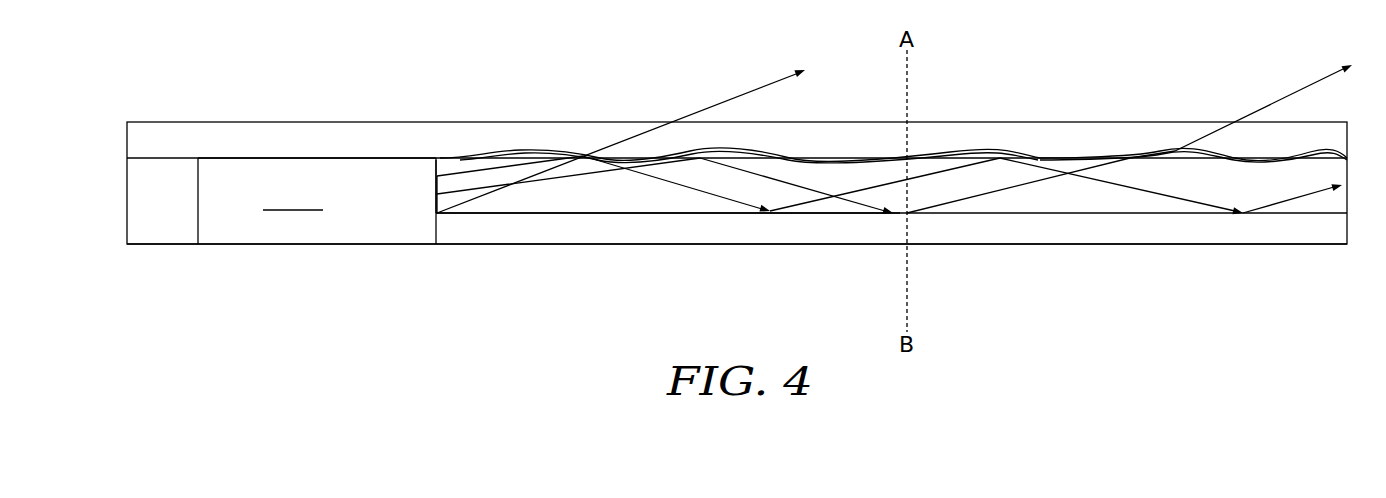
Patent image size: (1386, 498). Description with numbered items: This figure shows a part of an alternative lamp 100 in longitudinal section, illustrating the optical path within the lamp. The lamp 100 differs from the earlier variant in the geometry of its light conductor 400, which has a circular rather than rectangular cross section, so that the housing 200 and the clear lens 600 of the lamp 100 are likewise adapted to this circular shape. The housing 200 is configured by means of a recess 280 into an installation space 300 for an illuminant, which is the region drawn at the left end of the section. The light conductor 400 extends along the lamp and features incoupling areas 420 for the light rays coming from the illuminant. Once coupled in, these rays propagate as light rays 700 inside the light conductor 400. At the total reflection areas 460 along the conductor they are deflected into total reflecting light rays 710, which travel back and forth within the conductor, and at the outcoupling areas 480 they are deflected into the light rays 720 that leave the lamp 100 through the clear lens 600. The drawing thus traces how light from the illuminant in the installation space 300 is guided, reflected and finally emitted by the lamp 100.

The lamp 100 is at (487, 91).
The housing 200 is at (942, 232).
The recess 280 is at (306, 236).
The installation space 300 is at (260, 201).
The light conductor 400 is at (546, 202).
The incoupling area 420 is at (412, 186).
The total reflection area 460 is at (1014, 141).
The outcoupling area 480 is at (1170, 141).
The clear lens 600 is at (448, 150).
The light ray 700 is at (547, 186).
The total reflecting light ray 710 is at (773, 172).
The light ray leaving the lamp 720 is at (766, 82).